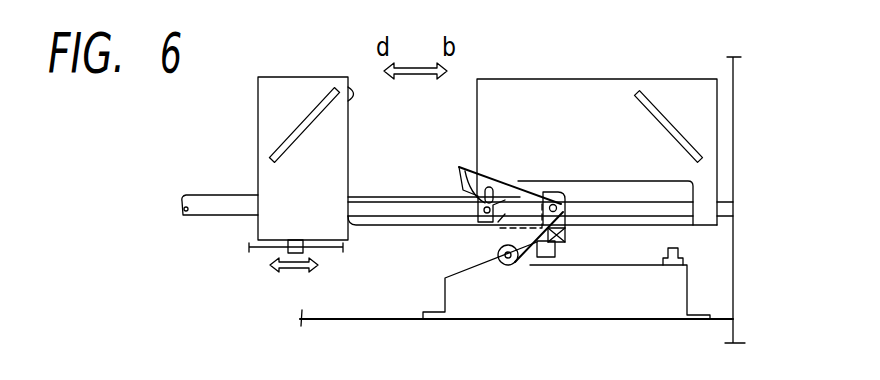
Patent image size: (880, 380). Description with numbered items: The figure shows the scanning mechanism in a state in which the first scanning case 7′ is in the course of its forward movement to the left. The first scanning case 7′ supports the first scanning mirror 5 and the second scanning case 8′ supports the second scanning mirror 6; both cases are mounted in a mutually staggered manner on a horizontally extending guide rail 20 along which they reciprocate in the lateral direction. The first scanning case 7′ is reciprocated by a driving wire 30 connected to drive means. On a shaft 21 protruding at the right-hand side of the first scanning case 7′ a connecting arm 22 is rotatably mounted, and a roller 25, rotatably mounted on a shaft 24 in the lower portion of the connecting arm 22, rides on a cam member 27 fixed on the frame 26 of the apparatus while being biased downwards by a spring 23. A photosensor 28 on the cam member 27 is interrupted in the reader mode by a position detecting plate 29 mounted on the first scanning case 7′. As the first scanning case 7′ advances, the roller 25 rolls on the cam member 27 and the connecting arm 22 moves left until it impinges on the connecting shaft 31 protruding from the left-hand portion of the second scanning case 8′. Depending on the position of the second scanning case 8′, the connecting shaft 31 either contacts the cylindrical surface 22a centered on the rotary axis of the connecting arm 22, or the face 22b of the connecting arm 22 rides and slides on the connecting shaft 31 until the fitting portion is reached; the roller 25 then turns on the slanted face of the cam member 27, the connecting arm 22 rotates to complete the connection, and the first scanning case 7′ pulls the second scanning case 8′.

The first scanning mirror 5 is at (292, 136).
The second scanning mirror 6 is at (673, 128).
The first scanning case 7′ is at (280, 86).
The second scanning case 8′ is at (576, 96).
The guide rail 20 is at (210, 205).
The shaft 21 is at (547, 193).
The connecting arm 22 is at (485, 242).
The cylindrical surface 22a is at (508, 206).
The face 22b is at (462, 178).
The spring 23 is at (567, 233).
The shaft 24 is at (507, 266).
The roller 25 is at (487, 263).
The frame 26 is at (736, 68).
The cam member 27 is at (633, 300).
The photosensor 28 is at (683, 250).
The position detecting plate 29 is at (546, 259).
The driving wire 30 is at (253, 249).
The connecting shaft 31 is at (473, 183).